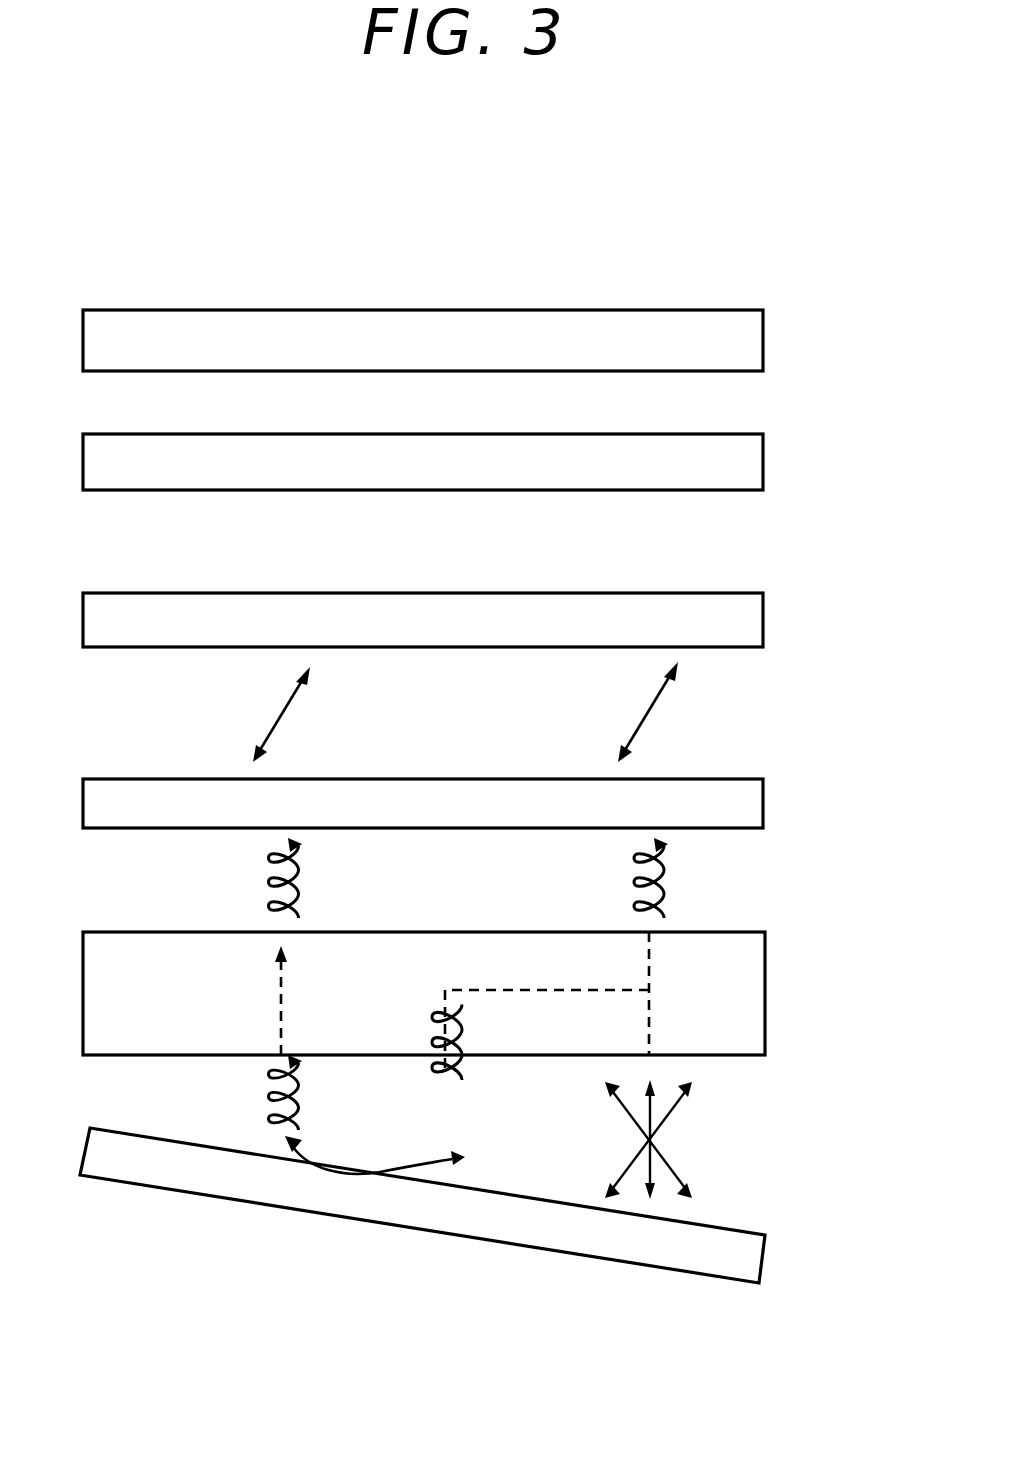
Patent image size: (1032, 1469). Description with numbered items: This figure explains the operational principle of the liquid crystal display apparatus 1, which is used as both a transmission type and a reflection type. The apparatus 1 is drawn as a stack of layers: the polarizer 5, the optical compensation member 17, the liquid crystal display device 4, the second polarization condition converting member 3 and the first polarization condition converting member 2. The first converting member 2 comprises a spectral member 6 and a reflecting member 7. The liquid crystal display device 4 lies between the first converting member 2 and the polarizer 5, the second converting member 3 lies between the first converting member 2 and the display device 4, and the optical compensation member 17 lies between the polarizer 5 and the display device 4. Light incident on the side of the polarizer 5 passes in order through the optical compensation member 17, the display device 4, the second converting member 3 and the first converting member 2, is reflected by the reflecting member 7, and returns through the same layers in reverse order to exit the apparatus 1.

The liquid crystal display apparatus 1 is at (803, 213).
The first member for converting polarization condition 2 is at (852, 927).
The second member for converting polarization condition 3 is at (752, 803).
The liquid crystal display device 4 is at (747, 624).
The polarizer 5 is at (742, 342).
The spectral member 6 is at (749, 1004).
The reflecting member 7 is at (745, 1264).
The member for optical compensation 17 is at (750, 463).